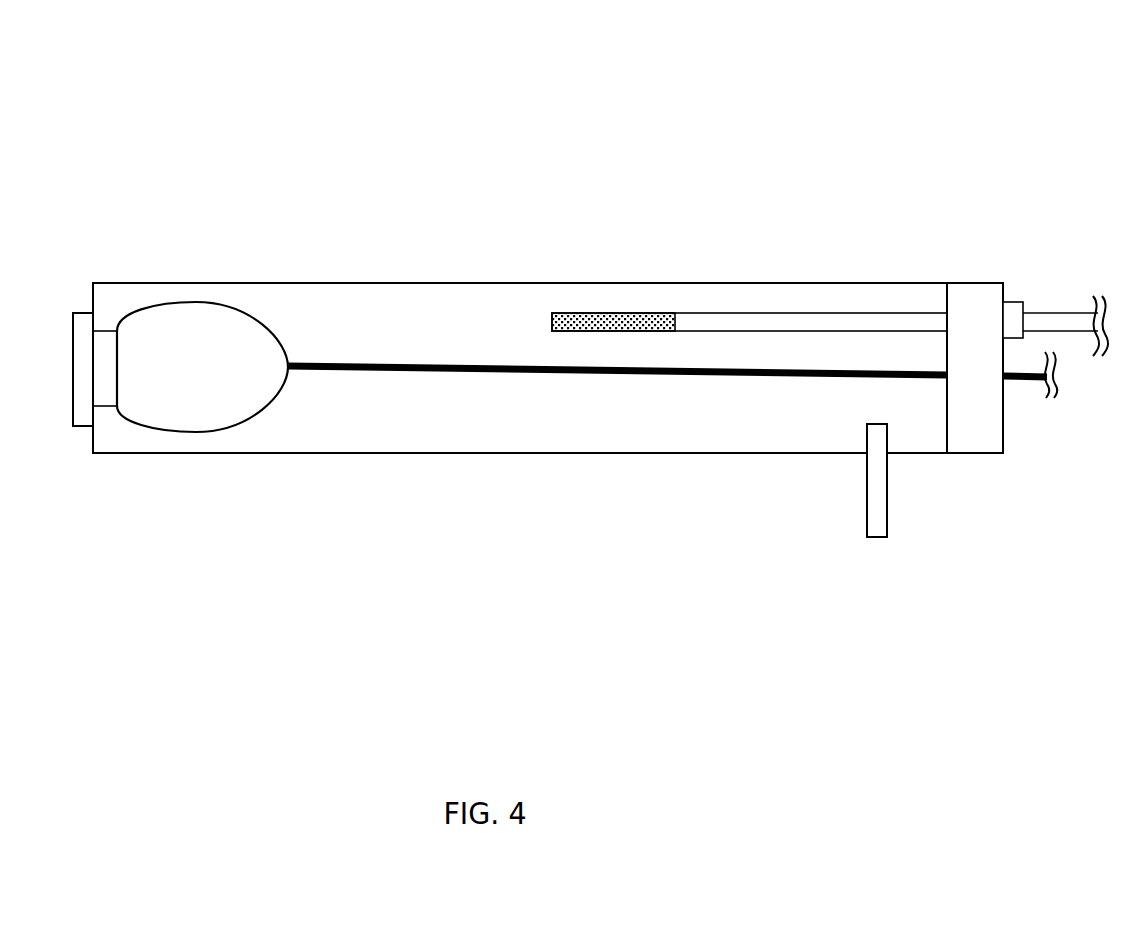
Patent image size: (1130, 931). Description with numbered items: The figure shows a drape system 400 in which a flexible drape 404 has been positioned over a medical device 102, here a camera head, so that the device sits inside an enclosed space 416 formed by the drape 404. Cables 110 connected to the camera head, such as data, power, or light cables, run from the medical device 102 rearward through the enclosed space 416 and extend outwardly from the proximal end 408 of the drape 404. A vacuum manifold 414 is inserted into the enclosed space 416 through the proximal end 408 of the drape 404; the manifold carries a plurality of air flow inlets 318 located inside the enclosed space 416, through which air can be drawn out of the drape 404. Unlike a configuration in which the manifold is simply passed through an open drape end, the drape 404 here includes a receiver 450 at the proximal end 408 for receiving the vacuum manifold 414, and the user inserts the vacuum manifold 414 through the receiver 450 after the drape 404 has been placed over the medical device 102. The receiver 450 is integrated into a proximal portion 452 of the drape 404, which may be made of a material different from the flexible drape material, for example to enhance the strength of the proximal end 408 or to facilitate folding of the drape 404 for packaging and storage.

The drape system 400 is at (181, 147).
The drape 404 is at (251, 264).
The enclosed space 416 is at (426, 430).
The medical device 102 is at (174, 303).
The cables 110 is at (385, 364).
The vacuum manifold 414 is at (737, 313).
The plurality of air flow inlets 318 is at (630, 316).
The proximal portion 452 is at (965, 285).
The receiver 450 is at (1018, 302).
The proximal end 408 is at (1007, 473).